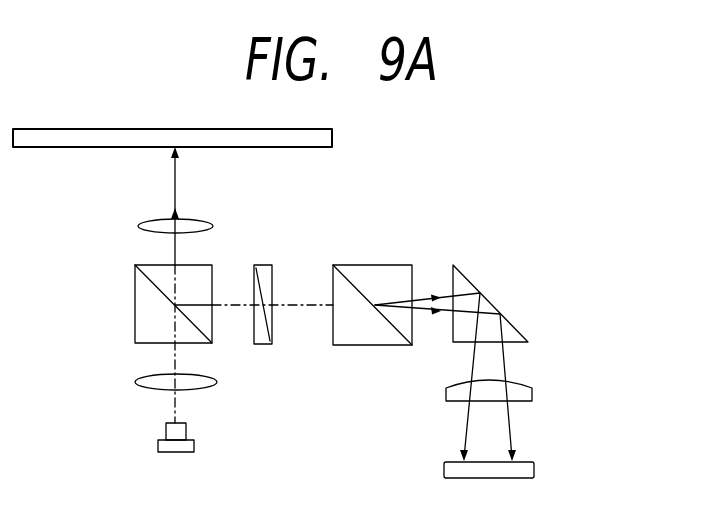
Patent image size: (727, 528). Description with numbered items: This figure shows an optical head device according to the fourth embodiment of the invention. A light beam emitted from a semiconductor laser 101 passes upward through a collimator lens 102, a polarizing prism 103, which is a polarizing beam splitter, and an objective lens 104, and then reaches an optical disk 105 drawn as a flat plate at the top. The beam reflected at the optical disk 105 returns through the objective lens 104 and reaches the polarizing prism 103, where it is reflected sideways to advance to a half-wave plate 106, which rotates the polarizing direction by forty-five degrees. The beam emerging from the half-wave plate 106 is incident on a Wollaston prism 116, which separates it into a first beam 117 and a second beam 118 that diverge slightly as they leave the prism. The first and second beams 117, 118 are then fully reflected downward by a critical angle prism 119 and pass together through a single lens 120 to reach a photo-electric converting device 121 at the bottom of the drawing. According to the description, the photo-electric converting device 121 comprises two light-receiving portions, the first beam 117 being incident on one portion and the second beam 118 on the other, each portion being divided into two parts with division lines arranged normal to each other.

The semiconductor laser 101 is at (160, 445).
The collimator lens 102 is at (148, 386).
The polarizing prism 103 is at (135, 293).
The objective lens 104 is at (142, 229).
The optical disk 105 is at (336, 137).
The half-wave plate 106 is at (262, 346).
The Wollaston prism 116 is at (353, 265).
The first beam 117 is at (437, 316).
The second beam 118 is at (437, 296).
The critical angle prism 119 is at (523, 318).
The single lens 120 is at (533, 386).
The photo-electric converting device 121 is at (531, 459).